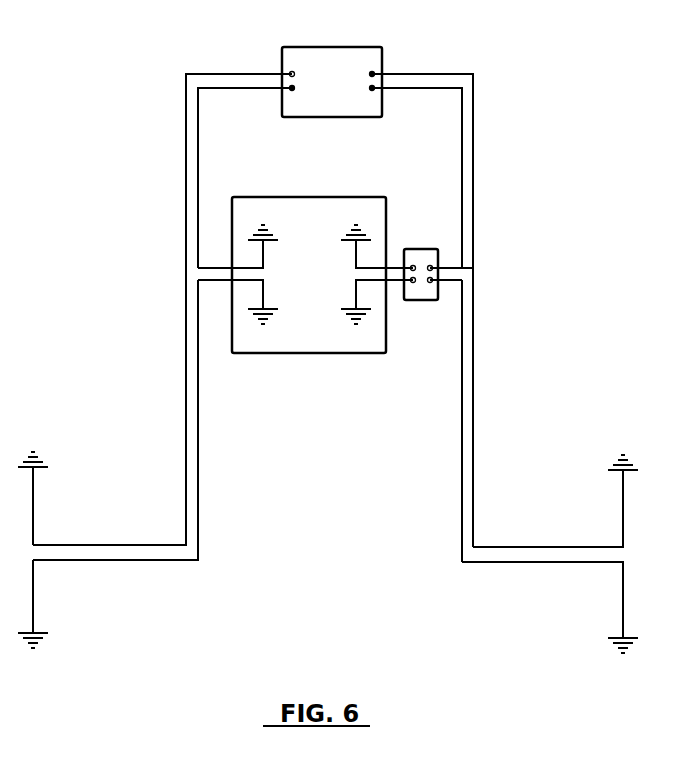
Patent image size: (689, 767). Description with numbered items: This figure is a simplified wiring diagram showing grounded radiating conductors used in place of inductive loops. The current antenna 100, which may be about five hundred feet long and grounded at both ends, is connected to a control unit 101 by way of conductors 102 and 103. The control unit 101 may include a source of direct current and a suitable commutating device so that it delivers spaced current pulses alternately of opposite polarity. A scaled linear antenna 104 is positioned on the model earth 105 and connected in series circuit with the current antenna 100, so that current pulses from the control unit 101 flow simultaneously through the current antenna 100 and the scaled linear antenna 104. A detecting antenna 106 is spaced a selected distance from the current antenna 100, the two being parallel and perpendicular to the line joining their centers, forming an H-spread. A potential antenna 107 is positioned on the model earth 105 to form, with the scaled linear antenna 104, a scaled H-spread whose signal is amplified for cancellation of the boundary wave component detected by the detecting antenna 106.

The current antenna 100 is at (33, 505).
The control unit 101 is at (327, 55).
The conductor 102 is at (183, 422).
The conductor 103 is at (200, 405).
The scaled linear antenna 104 is at (264, 257).
The model earth 105 is at (318, 207).
The detecting antenna 106 is at (622, 495).
The potential antenna 107 is at (355, 280).